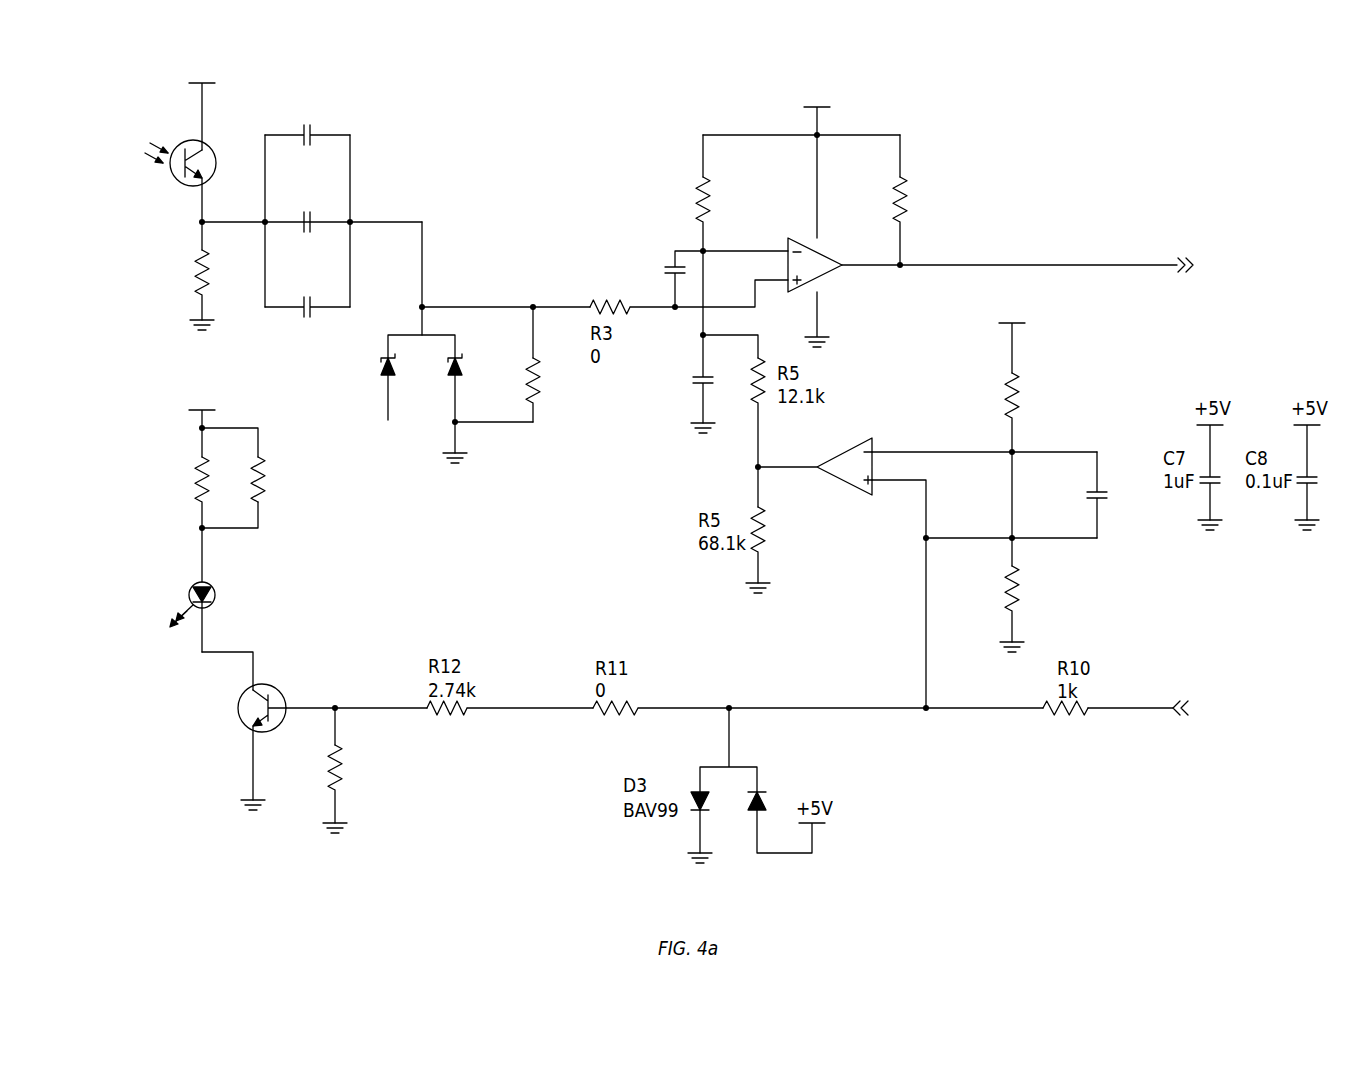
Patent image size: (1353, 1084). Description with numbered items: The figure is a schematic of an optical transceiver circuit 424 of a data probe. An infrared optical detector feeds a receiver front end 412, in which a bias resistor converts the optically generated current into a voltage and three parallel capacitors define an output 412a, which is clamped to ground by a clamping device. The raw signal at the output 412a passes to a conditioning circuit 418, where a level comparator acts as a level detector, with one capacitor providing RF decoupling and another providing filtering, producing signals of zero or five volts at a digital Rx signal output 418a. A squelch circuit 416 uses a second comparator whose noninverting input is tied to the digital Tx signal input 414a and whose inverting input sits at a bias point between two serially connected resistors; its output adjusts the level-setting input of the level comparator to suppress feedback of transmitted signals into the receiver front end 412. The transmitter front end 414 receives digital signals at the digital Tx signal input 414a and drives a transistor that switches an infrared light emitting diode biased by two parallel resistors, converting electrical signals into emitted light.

The receiver front end 412 is at (427, 158).
The output 412a is at (533, 305).
The transmitter front end 414 is at (345, 610).
The digital Tx signal input 414a is at (1138, 707).
The squelch circuit 416 is at (1087, 407).
The conditioning circuit 418 is at (945, 228).
The digital Rx signal output 418a is at (1128, 264).
The optical transceiver circuit 424 is at (1127, 148).